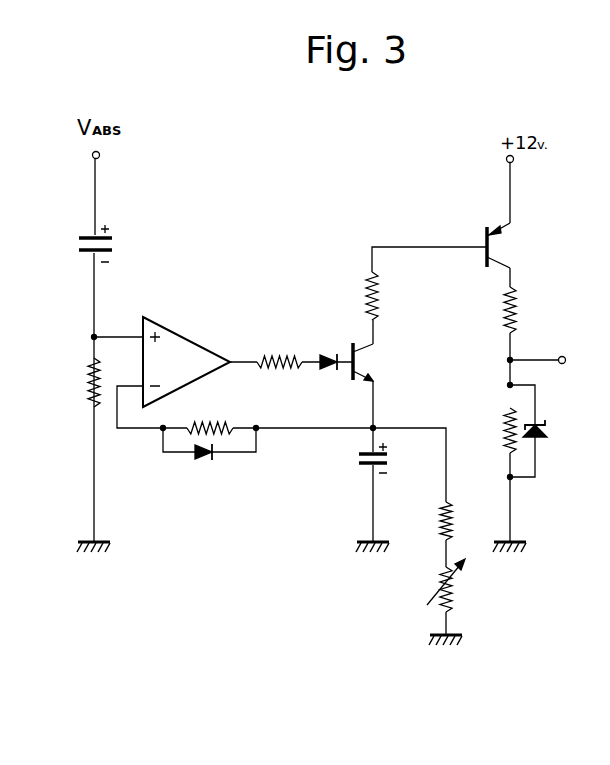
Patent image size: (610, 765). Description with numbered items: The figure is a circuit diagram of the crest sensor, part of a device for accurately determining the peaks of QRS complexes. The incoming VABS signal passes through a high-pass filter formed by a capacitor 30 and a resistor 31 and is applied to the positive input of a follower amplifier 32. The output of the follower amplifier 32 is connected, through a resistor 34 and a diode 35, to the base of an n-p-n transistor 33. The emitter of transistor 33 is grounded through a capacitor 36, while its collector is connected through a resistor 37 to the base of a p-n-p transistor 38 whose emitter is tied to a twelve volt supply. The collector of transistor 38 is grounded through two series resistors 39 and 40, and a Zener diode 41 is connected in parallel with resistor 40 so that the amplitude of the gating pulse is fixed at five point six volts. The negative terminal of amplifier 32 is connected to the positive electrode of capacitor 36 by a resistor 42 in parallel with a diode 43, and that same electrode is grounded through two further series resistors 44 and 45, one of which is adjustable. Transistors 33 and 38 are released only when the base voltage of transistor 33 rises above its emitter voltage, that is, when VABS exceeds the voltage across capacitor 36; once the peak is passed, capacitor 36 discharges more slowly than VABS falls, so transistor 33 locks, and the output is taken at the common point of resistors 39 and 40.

The capacitor 30 is at (81, 238).
The resistor 31 is at (87, 384).
The follower amplifier 32 is at (190, 347).
The n-p-n transistor 33 is at (375, 365).
The resistor 34 is at (273, 357).
The diode 35 is at (322, 355).
The capacitor 36 is at (361, 464).
The resistor 37 is at (381, 298).
The p-n-p transistor 38 is at (484, 232).
The resistor 39 is at (518, 303).
The resistor 40 is at (502, 432).
The Zener diode 41 is at (548, 429).
The resistor 42 is at (216, 425).
The diode 43 is at (205, 460).
The resistor 44 is at (452, 515).
The adjustable resistor 45 is at (456, 596).